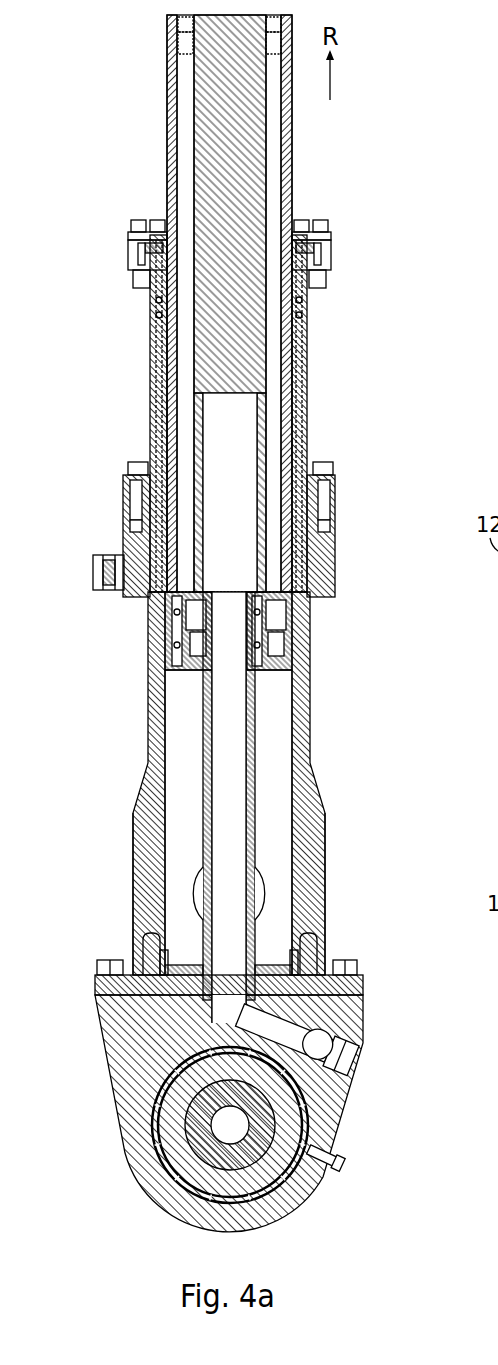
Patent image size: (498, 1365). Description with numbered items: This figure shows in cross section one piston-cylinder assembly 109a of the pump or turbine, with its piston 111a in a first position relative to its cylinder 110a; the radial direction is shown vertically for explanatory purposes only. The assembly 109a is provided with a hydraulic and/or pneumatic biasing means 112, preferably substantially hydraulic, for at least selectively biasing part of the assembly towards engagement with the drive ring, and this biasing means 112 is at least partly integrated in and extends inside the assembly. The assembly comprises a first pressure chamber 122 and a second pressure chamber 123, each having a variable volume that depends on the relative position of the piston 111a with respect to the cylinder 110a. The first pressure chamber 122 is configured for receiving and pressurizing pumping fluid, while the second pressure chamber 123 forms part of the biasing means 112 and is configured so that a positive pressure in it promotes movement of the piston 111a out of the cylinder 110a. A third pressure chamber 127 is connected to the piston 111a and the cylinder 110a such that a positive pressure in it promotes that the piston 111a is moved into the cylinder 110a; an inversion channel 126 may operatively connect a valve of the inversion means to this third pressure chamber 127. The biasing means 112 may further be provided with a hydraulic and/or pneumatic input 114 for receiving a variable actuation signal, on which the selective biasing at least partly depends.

The second hydraulic cylinder stage 109a is at (70, 405).
The cylinder 110a is at (145, 851).
The piston 111a is at (225, 165).
The hydraulic and/or pneumatic biasing means 112 is at (366, 679).
The hydraulic and/or pneumatic input 114 is at (362, 1059).
The first pressure chamber 122 is at (183, 740).
The second pressure chamber 123 is at (226, 453).
The inversion channel 126 is at (80, 575).
The third pressure chamber 127 is at (296, 576).